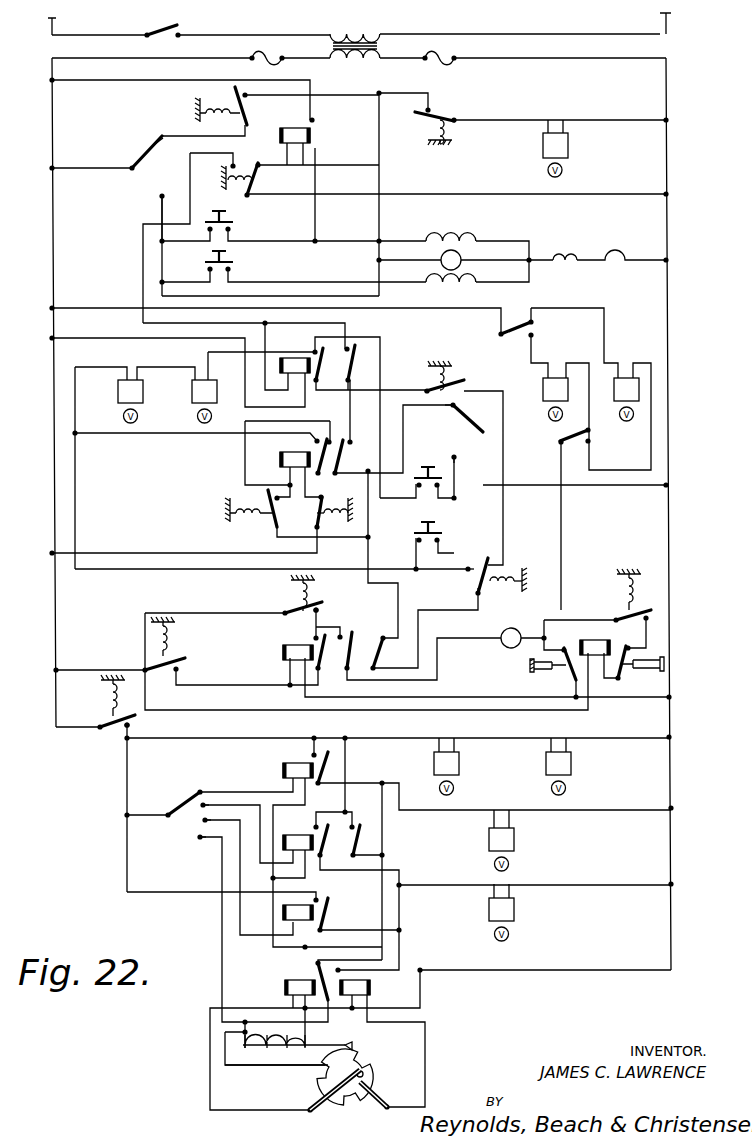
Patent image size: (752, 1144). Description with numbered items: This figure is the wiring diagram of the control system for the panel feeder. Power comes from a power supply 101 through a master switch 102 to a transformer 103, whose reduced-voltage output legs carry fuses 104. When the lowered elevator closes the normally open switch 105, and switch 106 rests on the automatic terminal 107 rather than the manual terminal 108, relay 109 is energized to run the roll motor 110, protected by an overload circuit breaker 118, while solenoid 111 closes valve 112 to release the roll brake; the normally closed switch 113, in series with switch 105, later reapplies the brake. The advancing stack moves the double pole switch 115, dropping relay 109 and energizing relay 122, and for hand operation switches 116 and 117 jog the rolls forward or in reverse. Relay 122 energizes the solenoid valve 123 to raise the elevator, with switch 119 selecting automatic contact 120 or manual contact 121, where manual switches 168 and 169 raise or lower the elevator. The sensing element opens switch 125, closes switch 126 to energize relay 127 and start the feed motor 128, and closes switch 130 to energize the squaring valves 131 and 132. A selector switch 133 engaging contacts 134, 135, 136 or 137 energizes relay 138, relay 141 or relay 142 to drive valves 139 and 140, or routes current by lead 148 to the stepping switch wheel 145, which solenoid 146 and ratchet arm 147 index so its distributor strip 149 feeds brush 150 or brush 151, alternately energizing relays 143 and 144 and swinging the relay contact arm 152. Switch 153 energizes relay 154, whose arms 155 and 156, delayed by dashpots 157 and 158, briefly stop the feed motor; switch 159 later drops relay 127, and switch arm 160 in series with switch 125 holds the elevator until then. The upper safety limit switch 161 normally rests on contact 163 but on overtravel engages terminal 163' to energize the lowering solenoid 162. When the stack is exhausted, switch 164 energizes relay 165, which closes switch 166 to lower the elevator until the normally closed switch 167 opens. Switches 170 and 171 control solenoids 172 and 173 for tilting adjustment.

The power supply 101 is at (56, 22).
The master switch 102 is at (178, 29).
The transformer 103 is at (366, 38).
The fuses 104 is at (272, 56).
The normally open switch 105 is at (248, 117).
The switch 106 is at (153, 146).
The automatic operation terminal 107 is at (158, 148).
The manual operation terminal 108 is at (160, 197).
The relay 109 is at (278, 142).
The roll motor 110 is at (447, 241).
The solenoid 111 is at (543, 147).
The normally open valve 112 is at (565, 171).
The normally closed switch 113 is at (420, 118).
The double pole switch 115 is at (254, 184).
The switch 116 is at (230, 218).
The switch 117 is at (230, 259).
The overload circuit breaker 118 is at (556, 256).
The switch 119 is at (465, 411).
The contact 120 is at (451, 408).
The contact 121 is at (462, 445).
The relay 122 is at (296, 359).
The solenoid valve 123 is at (192, 400).
The switch 125 is at (463, 385).
The switch 126 is at (181, 649).
The relay 127 is at (283, 652).
The motor 128 is at (501, 635).
The switch 130 is at (110, 718).
The valve 131 is at (468, 764).
The valve 132 is at (580, 764).
The selector switch 133 is at (172, 806).
The contact 134 is at (200, 792).
The contact 135 is at (202, 807).
The contact 136 is at (203, 822).
The contact 137 is at (198, 840).
The relay 138 is at (284, 763).
The valve 139 is at (522, 836).
The valve 140 is at (522, 908).
The relay 141 is at (305, 834).
The relay 142 is at (304, 905).
The relay 143 is at (300, 981).
The relay 144 is at (372, 989).
The stepping switch wheel 145 is at (364, 1062).
The solenoid 146 is at (243, 1033).
The ratchet arm 147 is at (353, 1045).
The lead 148 is at (276, 1065).
The distributor strip 149 is at (366, 1072).
The brush 150 is at (316, 1101).
The brush 151 is at (379, 1100).
The relay contact arm 152 is at (320, 962).
The switch 153 is at (614, 614).
The relay 154 is at (598, 640).
The switch arm 155 is at (572, 674).
The switch arm 156 is at (622, 676).
The dashpot 157 is at (529, 665).
The dashpot 158 is at (663, 656).
The switch 159 is at (286, 608).
The switch arm 160 is at (380, 652).
The upper safety limit switch 161 is at (478, 590).
The solenoid 162 is at (118, 400).
The contact 163 is at (513, 562).
The terminal 163' is at (472, 550).
The switch 164 is at (271, 522).
The relay 165 is at (284, 460).
The switch 166 is at (316, 440).
The normally closed switch 167 is at (318, 530).
The manual switch 168 is at (430, 456).
The manual switch 169 is at (428, 516).
The switch 170 is at (536, 332).
The switch 171 is at (594, 440).
The solenoid 172 is at (544, 400).
The solenoid 173 is at (628, 378).